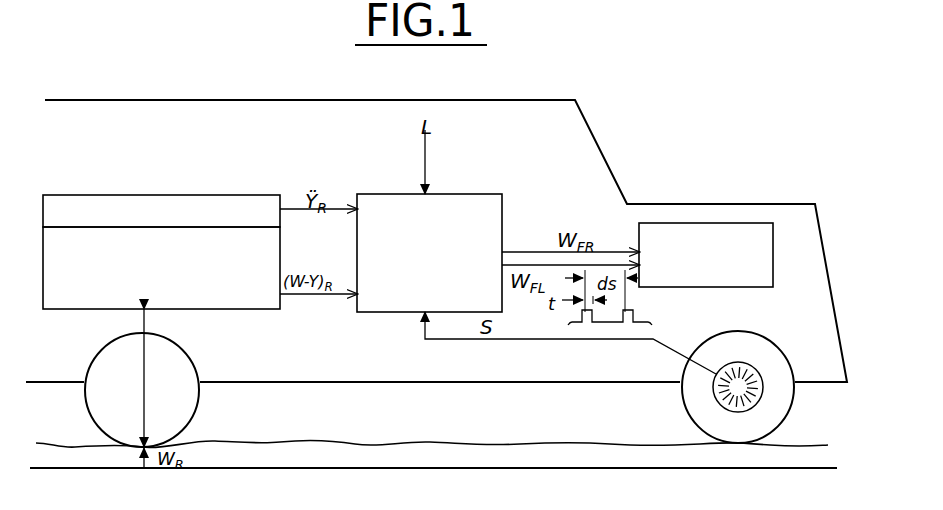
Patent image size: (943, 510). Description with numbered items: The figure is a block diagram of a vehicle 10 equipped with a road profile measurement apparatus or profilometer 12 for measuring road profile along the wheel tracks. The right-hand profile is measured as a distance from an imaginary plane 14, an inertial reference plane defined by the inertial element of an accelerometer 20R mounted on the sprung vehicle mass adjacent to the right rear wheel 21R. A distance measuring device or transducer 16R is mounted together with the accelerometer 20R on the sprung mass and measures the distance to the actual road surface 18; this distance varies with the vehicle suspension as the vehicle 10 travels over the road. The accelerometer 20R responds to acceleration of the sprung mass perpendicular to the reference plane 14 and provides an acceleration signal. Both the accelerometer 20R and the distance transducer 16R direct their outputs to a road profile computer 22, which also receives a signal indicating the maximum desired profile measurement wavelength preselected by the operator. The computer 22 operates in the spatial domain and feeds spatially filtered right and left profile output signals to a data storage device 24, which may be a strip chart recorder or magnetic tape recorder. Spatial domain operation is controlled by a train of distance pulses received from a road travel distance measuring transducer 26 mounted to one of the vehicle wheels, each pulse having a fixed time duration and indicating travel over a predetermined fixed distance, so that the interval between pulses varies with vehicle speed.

The vehicle 10 is at (620, 178).
The road profile measurement apparatus 12 is at (537, 192).
The imaginary plane 14 is at (272, 469).
The distance measuring device 16R is at (80, 300).
The road surface 18 is at (97, 448).
The accelerometer 20R is at (84, 198).
The right rear wheel 21R is at (177, 357).
The road profile computer 22 is at (482, 190).
The data storage device 24 is at (728, 288).
The road travel distance measuring transducer 26 is at (757, 370).